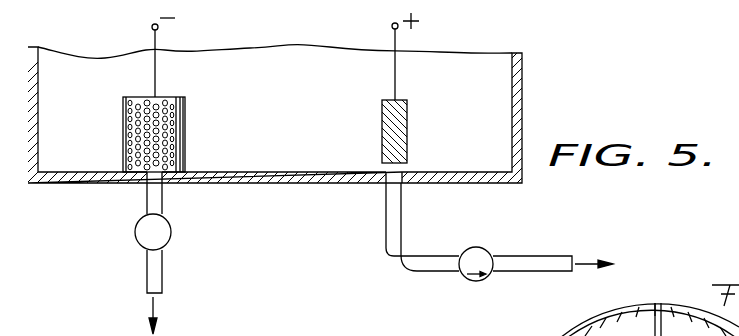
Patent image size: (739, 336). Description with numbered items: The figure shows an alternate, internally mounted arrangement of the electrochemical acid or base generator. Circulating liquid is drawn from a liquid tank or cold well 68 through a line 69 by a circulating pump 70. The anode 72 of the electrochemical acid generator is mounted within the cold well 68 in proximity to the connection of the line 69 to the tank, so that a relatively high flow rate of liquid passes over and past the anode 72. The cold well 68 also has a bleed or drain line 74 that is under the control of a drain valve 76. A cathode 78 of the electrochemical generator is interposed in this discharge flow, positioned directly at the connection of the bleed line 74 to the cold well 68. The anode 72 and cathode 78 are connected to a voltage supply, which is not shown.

The cold well 68 is at (513, 93).
The cathode 78 is at (173, 117).
The anode 72 is at (400, 123).
The bleed line 74 is at (157, 206).
The drain valve 76 is at (168, 238).
The line 69 is at (395, 210).
The circulating pump 70 is at (480, 248).